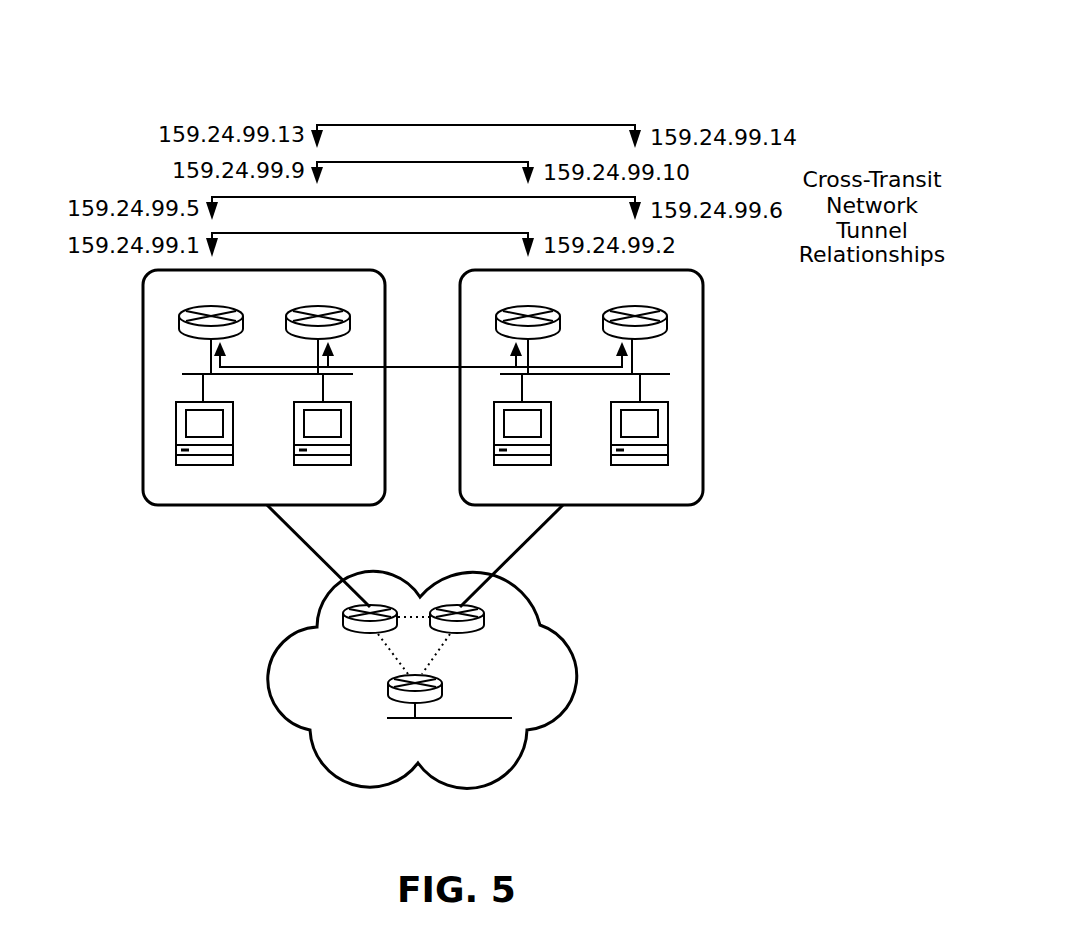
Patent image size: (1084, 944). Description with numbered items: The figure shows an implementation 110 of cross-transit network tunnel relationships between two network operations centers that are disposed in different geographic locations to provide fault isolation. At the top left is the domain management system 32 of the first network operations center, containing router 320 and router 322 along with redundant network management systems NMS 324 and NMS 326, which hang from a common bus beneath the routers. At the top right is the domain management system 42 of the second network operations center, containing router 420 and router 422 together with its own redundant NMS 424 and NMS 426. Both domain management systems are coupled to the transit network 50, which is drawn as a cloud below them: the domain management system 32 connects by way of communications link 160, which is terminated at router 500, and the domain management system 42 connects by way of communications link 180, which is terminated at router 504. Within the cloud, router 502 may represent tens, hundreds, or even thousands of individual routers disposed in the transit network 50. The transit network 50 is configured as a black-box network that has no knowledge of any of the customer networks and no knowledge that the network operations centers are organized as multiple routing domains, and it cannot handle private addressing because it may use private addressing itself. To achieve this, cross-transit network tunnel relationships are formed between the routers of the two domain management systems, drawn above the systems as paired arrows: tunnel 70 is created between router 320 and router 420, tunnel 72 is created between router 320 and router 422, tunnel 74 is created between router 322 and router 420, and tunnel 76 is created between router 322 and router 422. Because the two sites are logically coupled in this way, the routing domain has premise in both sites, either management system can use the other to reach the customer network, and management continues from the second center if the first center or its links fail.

The cross-transit network tunnel relationship system 110 is at (624, 74).
The tunnel 70 is at (406, 232).
The tunnel 72 is at (413, 196).
The tunnel 74 is at (426, 161).
The tunnel 76 is at (441, 124).
The domain management system 32 is at (143, 360).
The domain management system 42 is at (703, 362).
The router 320 is at (181, 321).
The router 322 is at (349, 320).
The NMS 324 is at (177, 420).
The NMS 326 is at (352, 456).
The router 420 is at (497, 321).
The router 422 is at (667, 320).
The NMS 424 is at (495, 420).
The NMS 426 is at (668, 437).
The communications link 160 is at (318, 550).
The communications link 180 is at (508, 550).
The transit network 50 is at (576, 660).
The router 500 is at (345, 617).
The router 502 is at (390, 687).
The router 504 is at (483, 617).